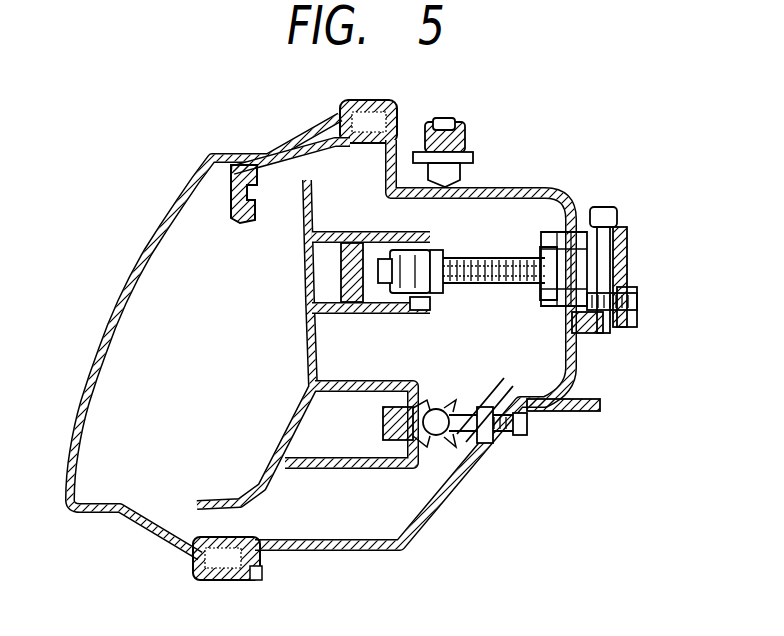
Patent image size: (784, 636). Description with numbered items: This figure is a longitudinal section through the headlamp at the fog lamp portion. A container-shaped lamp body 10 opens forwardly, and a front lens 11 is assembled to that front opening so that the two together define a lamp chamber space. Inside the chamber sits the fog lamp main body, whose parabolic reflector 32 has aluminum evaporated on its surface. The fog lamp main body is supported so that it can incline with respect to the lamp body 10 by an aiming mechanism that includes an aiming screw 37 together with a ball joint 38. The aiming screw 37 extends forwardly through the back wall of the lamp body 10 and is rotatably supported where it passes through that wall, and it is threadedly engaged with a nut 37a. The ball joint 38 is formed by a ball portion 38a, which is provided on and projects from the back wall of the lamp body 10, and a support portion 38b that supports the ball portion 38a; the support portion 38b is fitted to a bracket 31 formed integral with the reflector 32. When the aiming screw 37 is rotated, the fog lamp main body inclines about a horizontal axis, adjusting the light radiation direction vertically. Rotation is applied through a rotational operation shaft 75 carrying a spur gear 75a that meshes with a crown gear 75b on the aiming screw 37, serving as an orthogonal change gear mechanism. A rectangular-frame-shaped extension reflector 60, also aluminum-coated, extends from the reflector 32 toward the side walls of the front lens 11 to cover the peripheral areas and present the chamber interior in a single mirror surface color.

The lamp body 10 is at (533, 193).
The front lens 11 is at (100, 322).
The bracket 31 is at (403, 320).
The parabolic reflector 32 is at (305, 350).
The aiming screw 37 is at (497, 257).
The nut 37a is at (397, 232).
The ball joint 38 is at (580, 572).
The ball portion 38a is at (458, 437).
The support portion 38b is at (435, 440).
The extension reflector 60 is at (230, 206).
The rotational operation shaft 75 is at (623, 253).
The spur gear 75a is at (637, 307).
The crown gear 75b is at (583, 337).